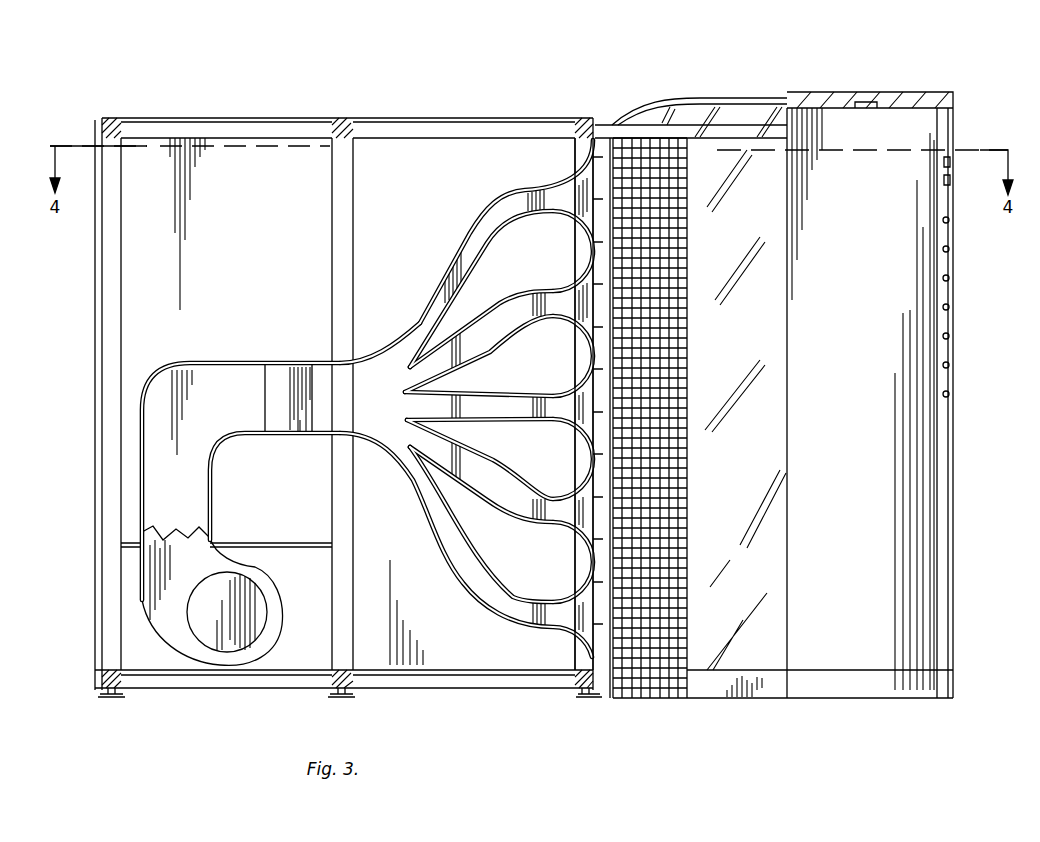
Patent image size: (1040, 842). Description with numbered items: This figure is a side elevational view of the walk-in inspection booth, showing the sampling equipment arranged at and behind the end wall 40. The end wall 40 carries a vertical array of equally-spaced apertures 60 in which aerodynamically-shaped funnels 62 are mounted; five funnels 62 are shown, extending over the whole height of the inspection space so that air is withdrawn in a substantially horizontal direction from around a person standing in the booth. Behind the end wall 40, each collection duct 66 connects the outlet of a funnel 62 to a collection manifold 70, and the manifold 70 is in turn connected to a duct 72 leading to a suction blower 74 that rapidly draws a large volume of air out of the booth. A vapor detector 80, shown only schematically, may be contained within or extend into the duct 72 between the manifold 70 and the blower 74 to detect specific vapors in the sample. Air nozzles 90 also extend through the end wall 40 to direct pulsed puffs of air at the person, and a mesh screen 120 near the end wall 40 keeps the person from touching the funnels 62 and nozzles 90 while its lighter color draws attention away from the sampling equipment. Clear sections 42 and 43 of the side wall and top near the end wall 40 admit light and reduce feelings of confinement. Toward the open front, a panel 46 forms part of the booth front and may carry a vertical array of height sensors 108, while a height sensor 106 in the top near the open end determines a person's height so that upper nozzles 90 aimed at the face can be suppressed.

The end wall 40 is at (596, 137).
The clear or translucent section 43 is at (698, 114).
The height sensor 106 is at (867, 102).
The aperture 60 is at (578, 181).
The funnel 62 is at (551, 215).
The collection duct 66 is at (497, 247).
The collection manifold 70 is at (366, 346).
The vapor detector 80 is at (283, 381).
The duct 72 is at (152, 412).
The suction blower 74 is at (252, 591).
The air nozzle 90 is at (598, 669).
The mesh screen 120 is at (668, 689).
The clear or translucent section 42 is at (748, 663).
The panel 46 is at (832, 666).
The height sensor 108 is at (948, 334).